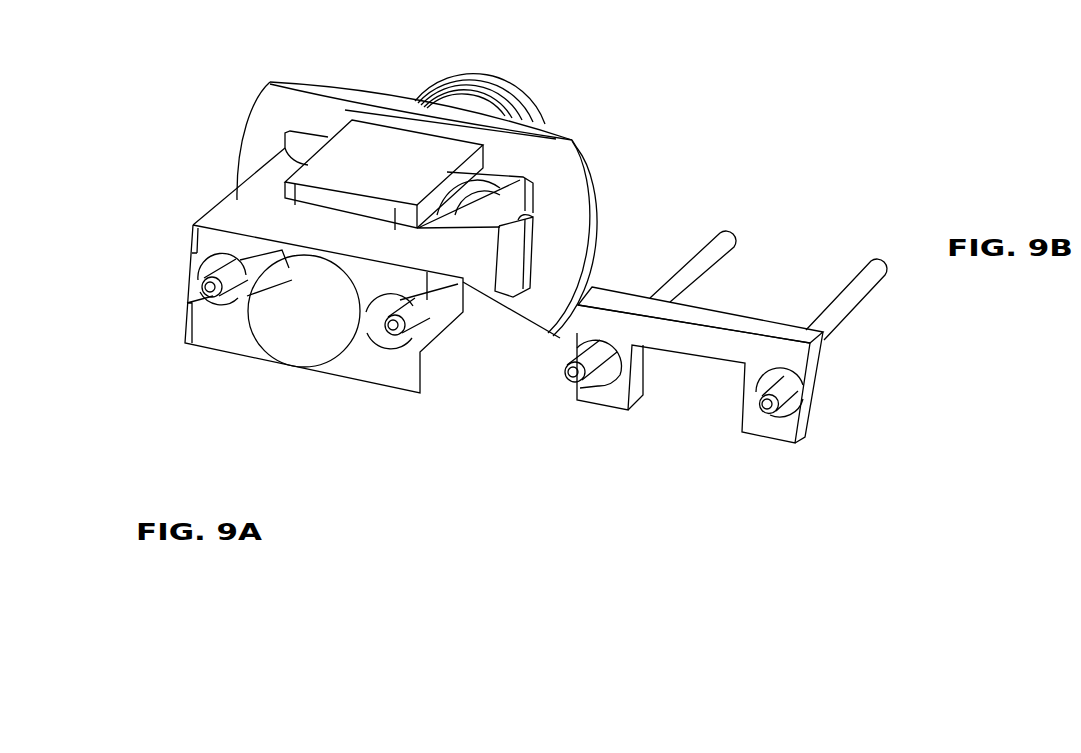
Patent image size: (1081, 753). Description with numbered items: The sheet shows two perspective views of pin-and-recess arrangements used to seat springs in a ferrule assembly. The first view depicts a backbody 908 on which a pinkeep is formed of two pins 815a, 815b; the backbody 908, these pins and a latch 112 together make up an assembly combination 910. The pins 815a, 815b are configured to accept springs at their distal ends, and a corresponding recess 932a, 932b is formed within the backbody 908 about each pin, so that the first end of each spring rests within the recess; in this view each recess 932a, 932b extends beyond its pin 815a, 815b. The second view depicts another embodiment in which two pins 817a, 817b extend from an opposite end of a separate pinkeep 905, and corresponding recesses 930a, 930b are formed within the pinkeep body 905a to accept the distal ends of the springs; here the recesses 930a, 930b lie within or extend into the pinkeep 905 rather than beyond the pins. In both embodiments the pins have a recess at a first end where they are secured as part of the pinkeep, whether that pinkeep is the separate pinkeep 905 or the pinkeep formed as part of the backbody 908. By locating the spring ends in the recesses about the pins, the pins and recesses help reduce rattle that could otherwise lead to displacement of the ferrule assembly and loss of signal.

In FIG. 9A, the backbody 908 is at (262, 198).
In FIG. 9A, the assembly combination 910 is at (646, 97).
In FIG. 9A, the latch 112 is at (508, 260).
In FIG. 9A, the pin 815a is at (210, 288).
In FIG. 9A, the pin 815b is at (398, 329).
In FIG. 9A, the recess 932a is at (230, 296).
In FIG. 9A, the recess 932b is at (391, 341).
In FIG. 9B, the pinkeep 905 is at (779, 285).
In FIG. 9B, the pinkeep body 905a is at (809, 345).
In FIG. 9B, the recess 930a is at (803, 383).
In FIG. 9B, the recess 930b is at (610, 369).
In FIG. 9B, the pin 817a is at (775, 401).
In FIG. 9B, the pin 817b is at (574, 377).